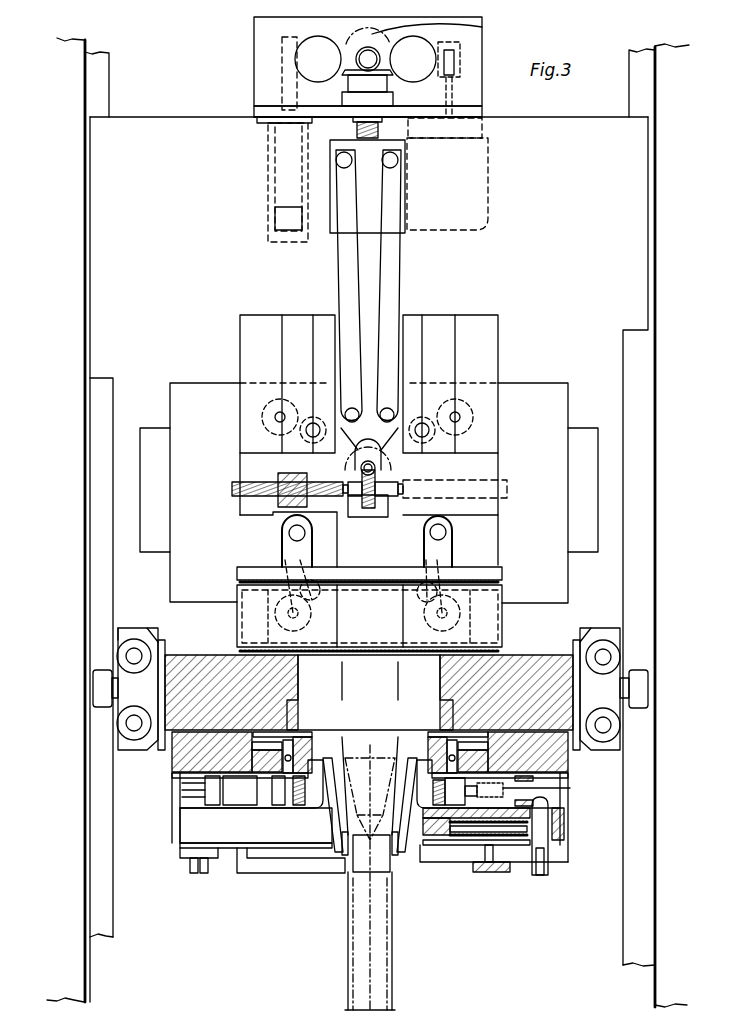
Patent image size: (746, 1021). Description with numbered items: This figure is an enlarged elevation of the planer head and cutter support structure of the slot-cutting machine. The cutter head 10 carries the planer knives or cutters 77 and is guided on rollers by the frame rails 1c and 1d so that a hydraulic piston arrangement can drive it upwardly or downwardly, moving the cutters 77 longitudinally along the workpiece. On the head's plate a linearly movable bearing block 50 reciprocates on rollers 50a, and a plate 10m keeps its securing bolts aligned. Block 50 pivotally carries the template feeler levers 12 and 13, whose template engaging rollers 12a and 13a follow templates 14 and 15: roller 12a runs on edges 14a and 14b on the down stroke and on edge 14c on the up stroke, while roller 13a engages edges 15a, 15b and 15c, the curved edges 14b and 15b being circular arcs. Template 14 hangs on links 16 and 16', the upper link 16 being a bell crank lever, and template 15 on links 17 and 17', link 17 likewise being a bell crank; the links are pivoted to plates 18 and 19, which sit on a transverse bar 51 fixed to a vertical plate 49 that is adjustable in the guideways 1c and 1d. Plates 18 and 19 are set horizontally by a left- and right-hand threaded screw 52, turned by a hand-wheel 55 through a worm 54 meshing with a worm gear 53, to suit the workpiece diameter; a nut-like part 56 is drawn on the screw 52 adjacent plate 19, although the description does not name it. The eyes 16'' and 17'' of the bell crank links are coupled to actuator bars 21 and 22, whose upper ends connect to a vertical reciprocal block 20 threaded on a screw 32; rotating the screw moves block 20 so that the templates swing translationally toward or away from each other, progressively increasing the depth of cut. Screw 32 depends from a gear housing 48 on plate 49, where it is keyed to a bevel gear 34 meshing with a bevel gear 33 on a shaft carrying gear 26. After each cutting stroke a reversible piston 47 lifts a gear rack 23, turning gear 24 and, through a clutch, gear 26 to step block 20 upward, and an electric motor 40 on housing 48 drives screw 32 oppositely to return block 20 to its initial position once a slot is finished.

The rail 1c is at (82, 412).
The rail 1d is at (656, 410).
The cutter head 10 is at (556, 765).
The plate 10m is at (243, 571).
The template feeler lever 12 is at (433, 555).
The template engaging roller 12a is at (437, 520).
The template feeler lever 13 is at (303, 552).
The template engaging roller 13a is at (283, 528).
The template 14 is at (438, 322).
The template edge 14a is at (413, 322).
The curvilinear template edge 14b is at (428, 612).
The template edge 14c is at (475, 325).
The template 15 is at (292, 322).
The template edge 15a is at (325, 327).
The curvilinear template edge 15b is at (305, 613).
The template edge 15c is at (252, 322).
The link 16 is at (470, 419).
The link 16' is at (486, 581).
The eye 16'' is at (438, 394).
The link 17 is at (250, 393).
The link 17' is at (256, 576).
The eye 17'' is at (345, 399).
The plate 18 is at (512, 393).
The plate 19 is at (203, 397).
The vertical reciprocal block 20 is at (377, 172).
The actuator bar 21 is at (393, 243).
The actuator bar 22 is at (345, 268).
The gear rack 23 is at (284, 61).
The gear 24 is at (296, 47).
The gear 26 is at (482, 27).
The screw 32 is at (357, 129).
The bevel gear 33 is at (347, 76).
The bevel gear 34 is at (389, 76).
The electric motor 40 is at (482, 156).
The reversible piston 47 is at (278, 218).
The gear housing 48 is at (254, 93).
The vertical plate 49 is at (566, 150).
The bearing block 50 is at (503, 597).
The rollers 50a is at (240, 647).
The transverse bar 51 is at (592, 442).
The screw 52 is at (253, 483).
The worm gear 53 is at (400, 482).
The worm 54 is at (368, 462).
The hand-wheel 55 is at (390, 456).
The spindle nut 56 is at (278, 498).
The planer knives or cutters 77 is at (345, 858).